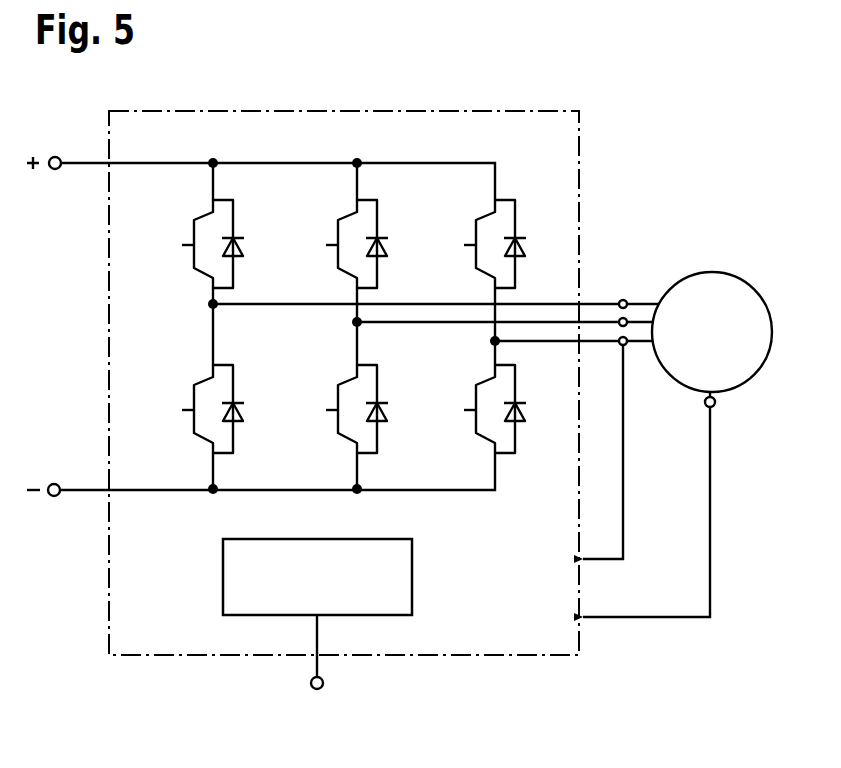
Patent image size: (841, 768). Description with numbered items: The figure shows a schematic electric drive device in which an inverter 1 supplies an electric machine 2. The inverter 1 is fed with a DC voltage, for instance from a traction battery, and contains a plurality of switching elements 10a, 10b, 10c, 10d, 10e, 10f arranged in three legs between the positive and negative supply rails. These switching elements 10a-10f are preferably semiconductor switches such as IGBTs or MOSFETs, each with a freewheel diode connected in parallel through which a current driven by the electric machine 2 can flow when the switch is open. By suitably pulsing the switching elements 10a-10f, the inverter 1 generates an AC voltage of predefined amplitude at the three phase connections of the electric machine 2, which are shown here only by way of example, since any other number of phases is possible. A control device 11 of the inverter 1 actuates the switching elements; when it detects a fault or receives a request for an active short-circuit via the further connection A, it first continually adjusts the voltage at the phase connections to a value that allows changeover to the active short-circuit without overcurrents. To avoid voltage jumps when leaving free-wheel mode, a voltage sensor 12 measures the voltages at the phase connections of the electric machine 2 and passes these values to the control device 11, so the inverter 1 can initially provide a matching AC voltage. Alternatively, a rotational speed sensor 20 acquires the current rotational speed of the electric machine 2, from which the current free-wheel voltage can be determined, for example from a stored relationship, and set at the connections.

The inverter 1 is at (379, 111).
The electric machine 2 is at (722, 273).
The switching element 10a is at (206, 213).
The switching element 10b is at (350, 213).
The switching element 10c is at (488, 213).
The switching element 10d is at (206, 378).
The switching element 10e is at (350, 378).
The switching element 10f is at (488, 378).
The control device 11 is at (222, 565).
The voltage sensor 12 is at (627, 338).
The rotational speed sensor 20 is at (716, 402).